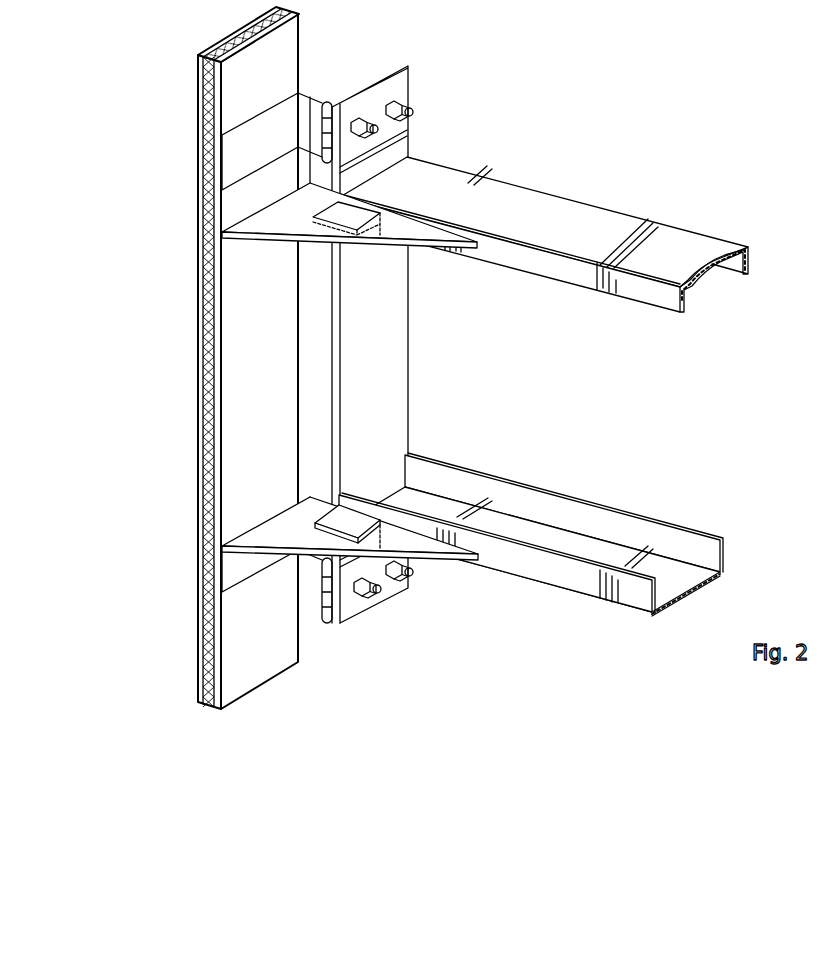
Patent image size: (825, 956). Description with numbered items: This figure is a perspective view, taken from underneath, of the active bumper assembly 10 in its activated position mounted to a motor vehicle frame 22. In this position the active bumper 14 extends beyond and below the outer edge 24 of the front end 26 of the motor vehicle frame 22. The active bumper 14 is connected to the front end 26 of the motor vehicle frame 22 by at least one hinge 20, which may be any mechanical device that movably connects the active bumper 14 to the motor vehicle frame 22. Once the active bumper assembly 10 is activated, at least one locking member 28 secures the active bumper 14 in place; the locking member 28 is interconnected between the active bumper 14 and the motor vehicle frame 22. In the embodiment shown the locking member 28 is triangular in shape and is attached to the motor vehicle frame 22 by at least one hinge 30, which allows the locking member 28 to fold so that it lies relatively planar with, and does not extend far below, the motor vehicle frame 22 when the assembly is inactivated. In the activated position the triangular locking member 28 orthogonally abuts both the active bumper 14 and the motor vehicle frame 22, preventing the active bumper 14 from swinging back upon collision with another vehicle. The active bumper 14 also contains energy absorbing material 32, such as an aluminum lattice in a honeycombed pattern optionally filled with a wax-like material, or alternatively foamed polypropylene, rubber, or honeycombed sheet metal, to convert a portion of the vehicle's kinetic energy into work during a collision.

The active bumper assembly 10 is at (112, 131).
The active bumper 14 is at (198, 341).
The hinge 20 is at (313, 103).
The motor vehicle frame 22 is at (543, 202).
The outer edge 24 is at (332, 352).
The front end 26 is at (398, 373).
The locking member 28 is at (392, 230).
The hinge 30 is at (366, 196).
The energy absorbing material 32 is at (213, 639).